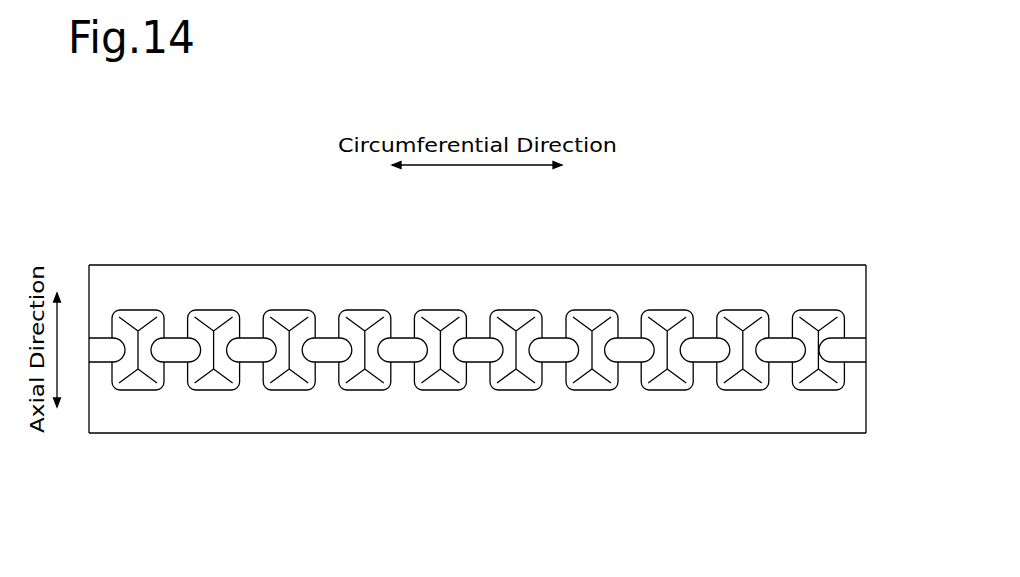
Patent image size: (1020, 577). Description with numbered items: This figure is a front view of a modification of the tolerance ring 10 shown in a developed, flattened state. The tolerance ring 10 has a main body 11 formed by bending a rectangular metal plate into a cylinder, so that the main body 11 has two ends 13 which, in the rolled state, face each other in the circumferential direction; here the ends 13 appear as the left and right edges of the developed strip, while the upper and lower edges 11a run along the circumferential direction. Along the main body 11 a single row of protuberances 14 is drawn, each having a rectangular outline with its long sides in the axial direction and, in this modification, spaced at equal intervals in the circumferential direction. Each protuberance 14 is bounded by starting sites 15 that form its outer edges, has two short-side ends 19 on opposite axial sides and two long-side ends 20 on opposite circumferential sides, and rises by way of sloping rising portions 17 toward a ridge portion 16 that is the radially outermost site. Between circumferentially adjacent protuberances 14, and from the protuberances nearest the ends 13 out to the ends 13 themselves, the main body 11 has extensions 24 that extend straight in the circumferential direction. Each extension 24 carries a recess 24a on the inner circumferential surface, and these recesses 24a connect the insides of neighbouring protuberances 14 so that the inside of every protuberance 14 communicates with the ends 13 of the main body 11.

The tolerance ring 10 is at (158, 166).
The main body 11 is at (262, 264).
The axial edge of body 11a is at (327, 265).
The ends 13 is at (89, 265).
The protuberances 14 is at (150, 308).
The starting sites 15 is at (597, 310).
The ridge portion 16 is at (585, 338).
The rising portions 17 is at (573, 367).
The short-side ends 19 is at (590, 310).
The long-side ends 20 is at (620, 372).
The extensions 24 is at (100, 350).
The recess 24a is at (83, 350).